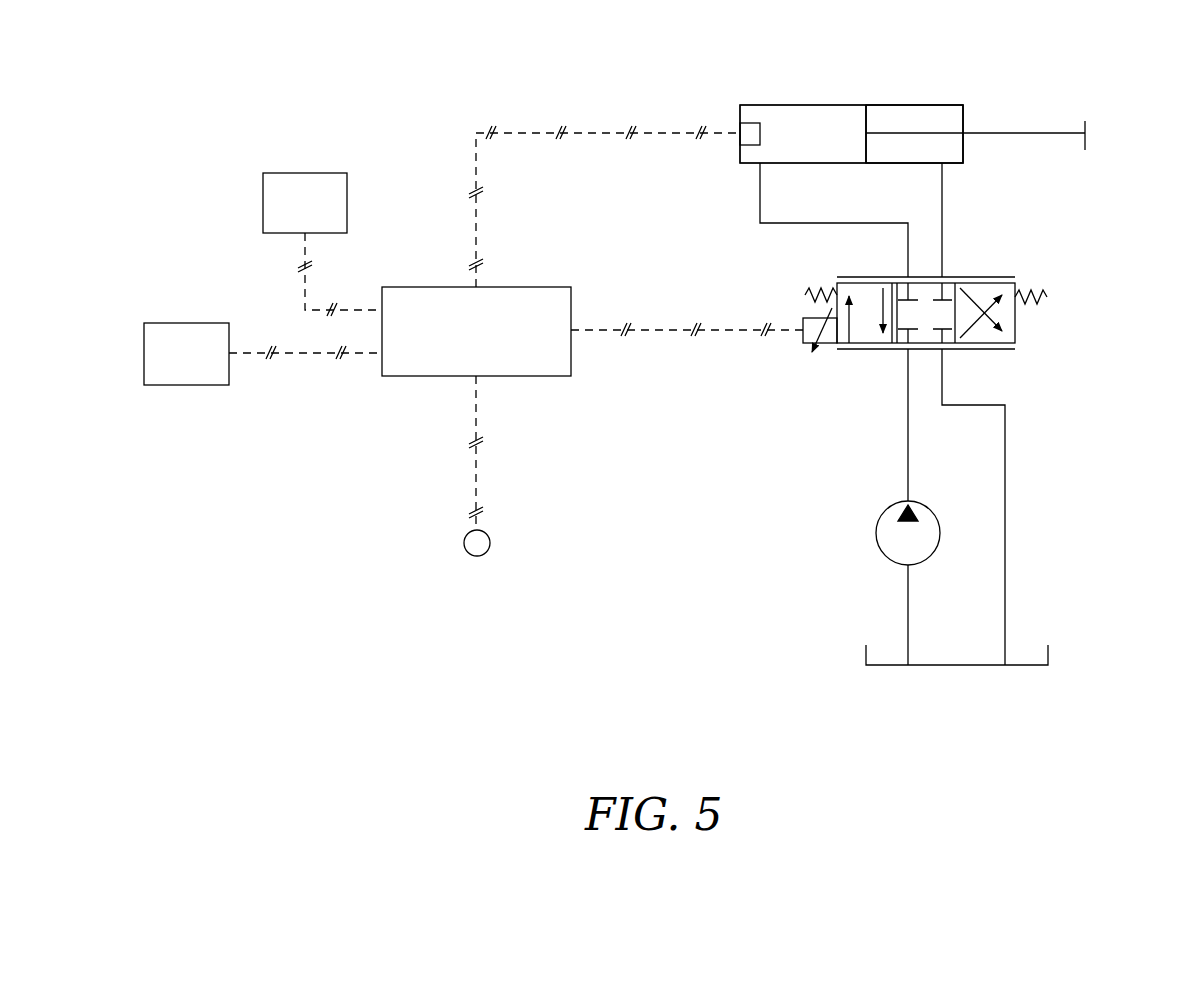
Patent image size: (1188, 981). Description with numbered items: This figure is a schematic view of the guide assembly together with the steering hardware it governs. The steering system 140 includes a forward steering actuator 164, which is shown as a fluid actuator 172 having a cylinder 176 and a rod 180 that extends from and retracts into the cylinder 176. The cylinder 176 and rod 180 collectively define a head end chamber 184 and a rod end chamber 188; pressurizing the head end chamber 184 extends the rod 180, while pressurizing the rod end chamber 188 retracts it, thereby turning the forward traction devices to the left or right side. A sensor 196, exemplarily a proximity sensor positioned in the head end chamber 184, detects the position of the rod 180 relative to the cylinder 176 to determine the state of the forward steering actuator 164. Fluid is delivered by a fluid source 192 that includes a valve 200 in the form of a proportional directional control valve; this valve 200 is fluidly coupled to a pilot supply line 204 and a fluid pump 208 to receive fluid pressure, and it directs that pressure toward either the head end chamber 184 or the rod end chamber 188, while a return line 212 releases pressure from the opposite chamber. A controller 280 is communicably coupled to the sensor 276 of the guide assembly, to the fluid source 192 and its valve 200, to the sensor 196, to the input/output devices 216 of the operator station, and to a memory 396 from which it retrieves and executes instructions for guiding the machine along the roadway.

The steering system 140 is at (862, 88).
The cylinder 176 is at (752, 105).
The forward steering actuator 164 is at (800, 105).
The fluid actuator 172 is at (851, 99).
The head end chamber 184 is at (845, 118).
The rod end chamber 188 is at (928, 118).
The rod 180 is at (1025, 133).
The sensor 196 is at (745, 125).
The fluid source 192 is at (984, 336).
The valve 200 is at (1017, 333).
The pilot supply line 204 is at (908, 427).
The fluid pump 208 is at (876, 528).
The return line 212 is at (1005, 462).
The input/output devices 216 is at (303, 173).
The controller 280 is at (551, 287).
The sensor 276 is at (464, 543).
The memory 396 is at (183, 385).